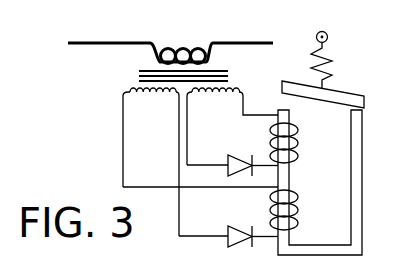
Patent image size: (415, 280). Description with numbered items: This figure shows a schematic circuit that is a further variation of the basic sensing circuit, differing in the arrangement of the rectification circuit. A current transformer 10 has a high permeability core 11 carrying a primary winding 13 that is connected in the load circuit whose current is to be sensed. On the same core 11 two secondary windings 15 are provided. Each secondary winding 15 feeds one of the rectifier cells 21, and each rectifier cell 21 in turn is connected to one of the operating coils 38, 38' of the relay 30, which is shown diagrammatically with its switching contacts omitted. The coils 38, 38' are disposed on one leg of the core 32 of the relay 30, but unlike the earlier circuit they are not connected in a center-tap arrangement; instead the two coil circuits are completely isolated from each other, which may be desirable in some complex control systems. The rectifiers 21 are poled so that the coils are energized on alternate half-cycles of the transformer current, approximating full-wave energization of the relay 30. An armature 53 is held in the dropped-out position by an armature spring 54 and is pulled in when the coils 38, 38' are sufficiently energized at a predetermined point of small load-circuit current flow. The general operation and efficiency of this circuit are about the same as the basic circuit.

The current transformer 10 is at (120, 82).
The high permeability core 11 is at (140, 77).
The primary winding 13 is at (182, 49).
The secondary winding 15 is at (154, 94).
The rectifier cells 21 is at (235, 158).
The relay 30 is at (332, 182).
The core 32 is at (357, 220).
The operating coil 38 is at (301, 137).
The operating coil 38' is at (303, 210).
The armature 53 is at (292, 82).
The armature spring 54 is at (333, 61).